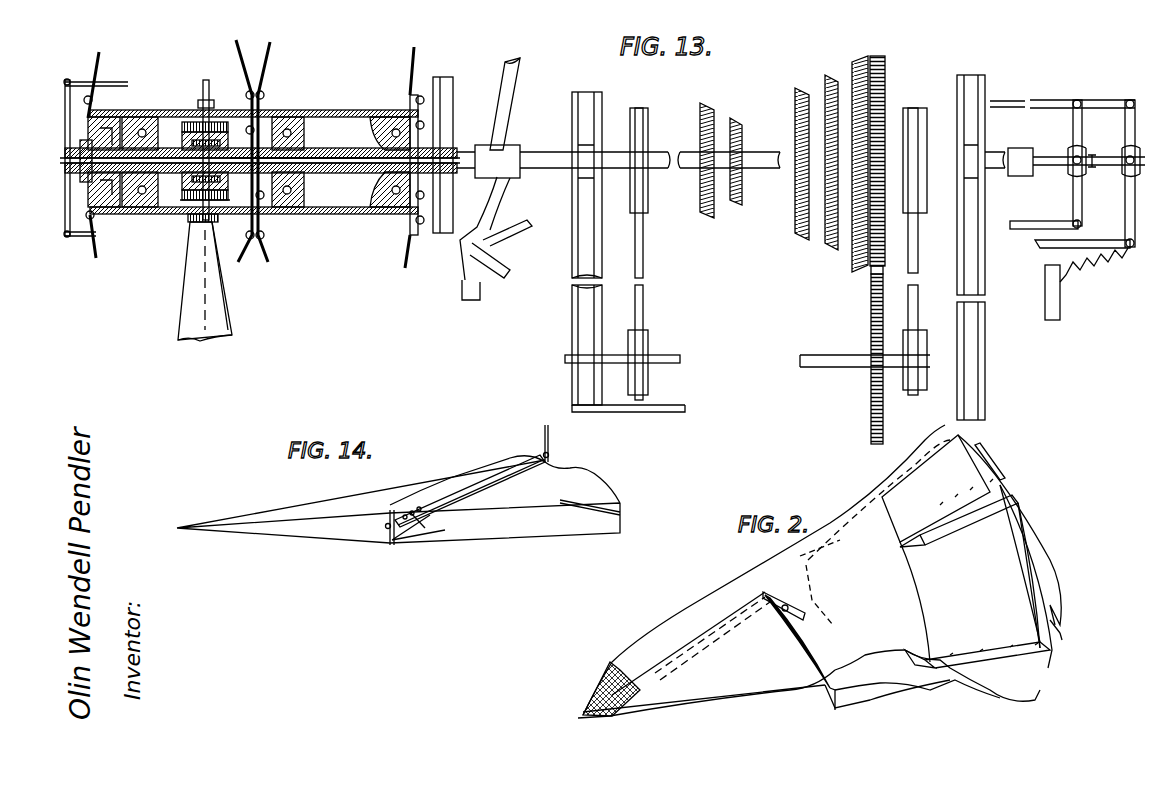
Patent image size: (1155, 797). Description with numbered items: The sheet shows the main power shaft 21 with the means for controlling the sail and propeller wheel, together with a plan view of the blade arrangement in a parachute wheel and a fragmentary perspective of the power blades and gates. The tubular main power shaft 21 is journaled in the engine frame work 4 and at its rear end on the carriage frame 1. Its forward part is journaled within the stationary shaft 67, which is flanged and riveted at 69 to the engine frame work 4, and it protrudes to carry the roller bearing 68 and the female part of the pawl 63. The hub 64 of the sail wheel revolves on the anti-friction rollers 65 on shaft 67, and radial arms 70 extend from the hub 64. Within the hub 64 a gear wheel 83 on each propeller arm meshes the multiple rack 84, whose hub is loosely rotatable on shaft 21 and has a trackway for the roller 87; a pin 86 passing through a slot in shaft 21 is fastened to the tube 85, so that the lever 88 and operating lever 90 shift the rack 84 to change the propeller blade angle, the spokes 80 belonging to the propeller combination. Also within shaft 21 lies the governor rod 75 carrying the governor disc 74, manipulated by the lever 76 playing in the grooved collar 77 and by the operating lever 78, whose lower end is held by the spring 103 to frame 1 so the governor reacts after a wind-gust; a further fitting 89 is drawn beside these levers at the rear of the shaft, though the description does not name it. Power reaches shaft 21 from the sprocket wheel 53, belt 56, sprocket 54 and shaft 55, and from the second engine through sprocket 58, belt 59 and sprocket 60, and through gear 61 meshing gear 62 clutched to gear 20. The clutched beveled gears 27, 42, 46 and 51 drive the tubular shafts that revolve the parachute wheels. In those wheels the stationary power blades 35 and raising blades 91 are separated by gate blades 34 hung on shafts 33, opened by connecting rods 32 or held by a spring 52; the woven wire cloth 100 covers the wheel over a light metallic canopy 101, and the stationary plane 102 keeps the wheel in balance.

In FIG. 13, the carriage frame 1 is at (503, 100).
In FIG. 13, the engine frame work 4 is at (445, 90).
In FIG. 13, the beveled gear 20 is at (858, 270).
In FIG. 13, the main power shaft 21 is at (248, 204).
In FIG. 13, the gear 27 is at (830, 250).
In FIG. 14, the connecting rod 32 is at (542, 430).
In FIG. 14, the shaft 33 is at (388, 530).
In FIG. 2, the shaft 33 is at (786, 602).
In FIG. 14, the gate blade 34 is at (442, 512).
In FIG. 2, the gate blade 34 is at (1004, 482).
In FIG. 14, the stationary power blade 35 is at (408, 468).
In FIG. 2, the stationary power blade 35 is at (672, 652).
In FIG. 13, the beveled gear 42 is at (798, 232).
In FIG. 13, the beveled gear 46 is at (706, 218).
In FIG. 13, the beveled gear 51 is at (735, 203).
In FIG. 14, the spring 52 is at (415, 535).
In FIG. 13, the sprocket wheel 53 is at (645, 120).
In FIG. 13, the sprocket 54 is at (648, 385).
In FIG. 13, the shaft 55 is at (676, 356).
In FIG. 13, the belt 56 is at (643, 240).
In FIG. 13, the sprocket 58 is at (905, 392).
In FIG. 13, the belt 59 is at (918, 258).
In FIG. 13, the sprocket 60 is at (918, 112).
In FIG. 13, the gear 61 is at (868, 327).
In FIG. 13, the gear 62 is at (880, 82).
In FIG. 13, the pawl 63 is at (92, 125).
In FIG. 13, the hub 64 is at (175, 110).
In FIG. 13, the anti-friction roller 65 is at (298, 114).
In FIG. 13, the stationary shaft 67 is at (345, 140).
In FIG. 13, the ball bearing 68 is at (148, 114).
In FIG. 13, the rivet 69 is at (428, 133).
In FIG. 13, the radial arm 70 is at (205, 92).
In FIG. 13, the governor disc 74 is at (66, 135).
In FIG. 13, the governor and operating rod 75 is at (68, 160).
In FIG. 13, the lever 76 is at (1125, 228).
In FIG. 13, the collar 77 is at (1105, 160).
In FIG. 13, the operating lever 78 is at (1050, 248).
In FIG. 13, the spoke 80 is at (96, 50).
In FIG. 13, the gear wheel 83 is at (195, 218).
In FIG. 13, the multiple rack 84 is at (185, 205).
In FIG. 13, the tube 85 is at (365, 175).
In FIG. 13, the pin 86 is at (191, 167).
In FIG. 13, the roller 87 is at (226, 118).
In FIG. 13, the lever 88 is at (1073, 208).
In FIG. 13, the bracket 89 is at (1086, 150).
In FIG. 13, the operating lever 90 is at (1022, 230).
In FIG. 2, the raising blade 91 is at (897, 484).
In FIG. 2, the woven wire cloth 100 is at (590, 698).
In FIG. 2, the metallic canopy 101 is at (638, 644).
In FIG. 2, the stationary plane 102 is at (878, 688).
In FIG. 13, the spring 103 is at (1085, 272).